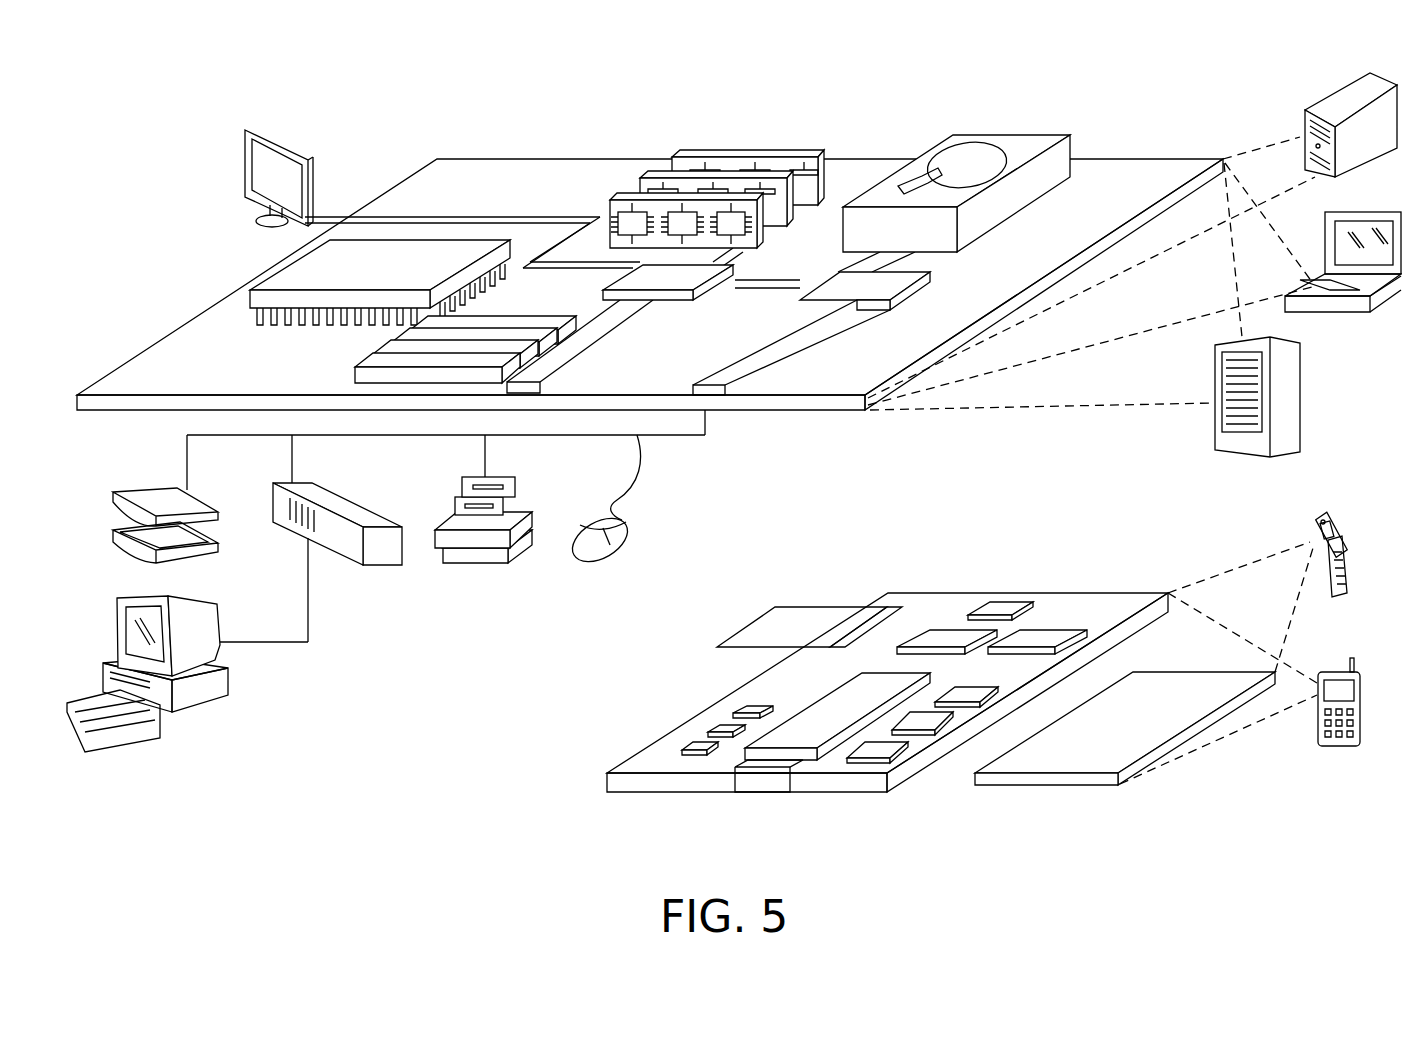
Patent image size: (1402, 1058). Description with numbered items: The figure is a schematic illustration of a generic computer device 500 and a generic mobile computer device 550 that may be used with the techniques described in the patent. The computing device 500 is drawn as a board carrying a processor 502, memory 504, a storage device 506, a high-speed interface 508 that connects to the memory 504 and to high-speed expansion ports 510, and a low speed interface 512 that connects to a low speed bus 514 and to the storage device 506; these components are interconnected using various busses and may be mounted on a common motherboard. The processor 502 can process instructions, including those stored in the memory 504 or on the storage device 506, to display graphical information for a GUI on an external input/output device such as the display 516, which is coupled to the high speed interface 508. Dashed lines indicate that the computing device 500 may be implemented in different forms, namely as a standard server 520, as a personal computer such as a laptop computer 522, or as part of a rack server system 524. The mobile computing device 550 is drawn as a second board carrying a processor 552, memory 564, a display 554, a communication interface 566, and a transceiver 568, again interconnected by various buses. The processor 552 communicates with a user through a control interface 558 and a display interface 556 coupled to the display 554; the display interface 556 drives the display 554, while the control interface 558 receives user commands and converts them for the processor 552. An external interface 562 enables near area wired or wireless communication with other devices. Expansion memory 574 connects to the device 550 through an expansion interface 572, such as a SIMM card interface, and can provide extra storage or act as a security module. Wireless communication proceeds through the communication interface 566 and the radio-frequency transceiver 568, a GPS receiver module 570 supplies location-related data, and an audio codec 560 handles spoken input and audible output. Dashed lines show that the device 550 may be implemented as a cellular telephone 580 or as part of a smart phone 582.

The generic computer device 500 is at (388, 103).
The processor 502 is at (278, 270).
The memory 504 is at (758, 155).
The storage device 506 is at (1003, 134).
The high-speed interface 508 is at (681, 273).
The high-speed expansion ports 510 is at (385, 352).
The low speed interface 512 is at (842, 286).
The low speed bus 514 is at (718, 383).
The display 516 is at (255, 128).
The standard server 520 is at (1326, 103).
The laptop computer 522 is at (1384, 212).
The rack server system 524 is at (1302, 397).
The generic mobile computer device 550 is at (556, 800).
The processor 552 is at (805, 720).
The display 554 is at (1166, 686).
The display interface 556 is at (888, 748).
The control interface 558 is at (930, 718).
The audio codec 560 is at (972, 686).
The external interface 562 is at (762, 776).
The memory 564 is at (715, 730).
The communication interface 566 is at (948, 628).
The transceiver 568 is at (1042, 630).
The GPS receiver module 570 is at (1003, 604).
The expansion interface 572 is at (865, 607).
The expansion memory 574 is at (777, 607).
The cellular telephone 580 is at (1322, 512).
The smart phone 582 is at (1335, 670).